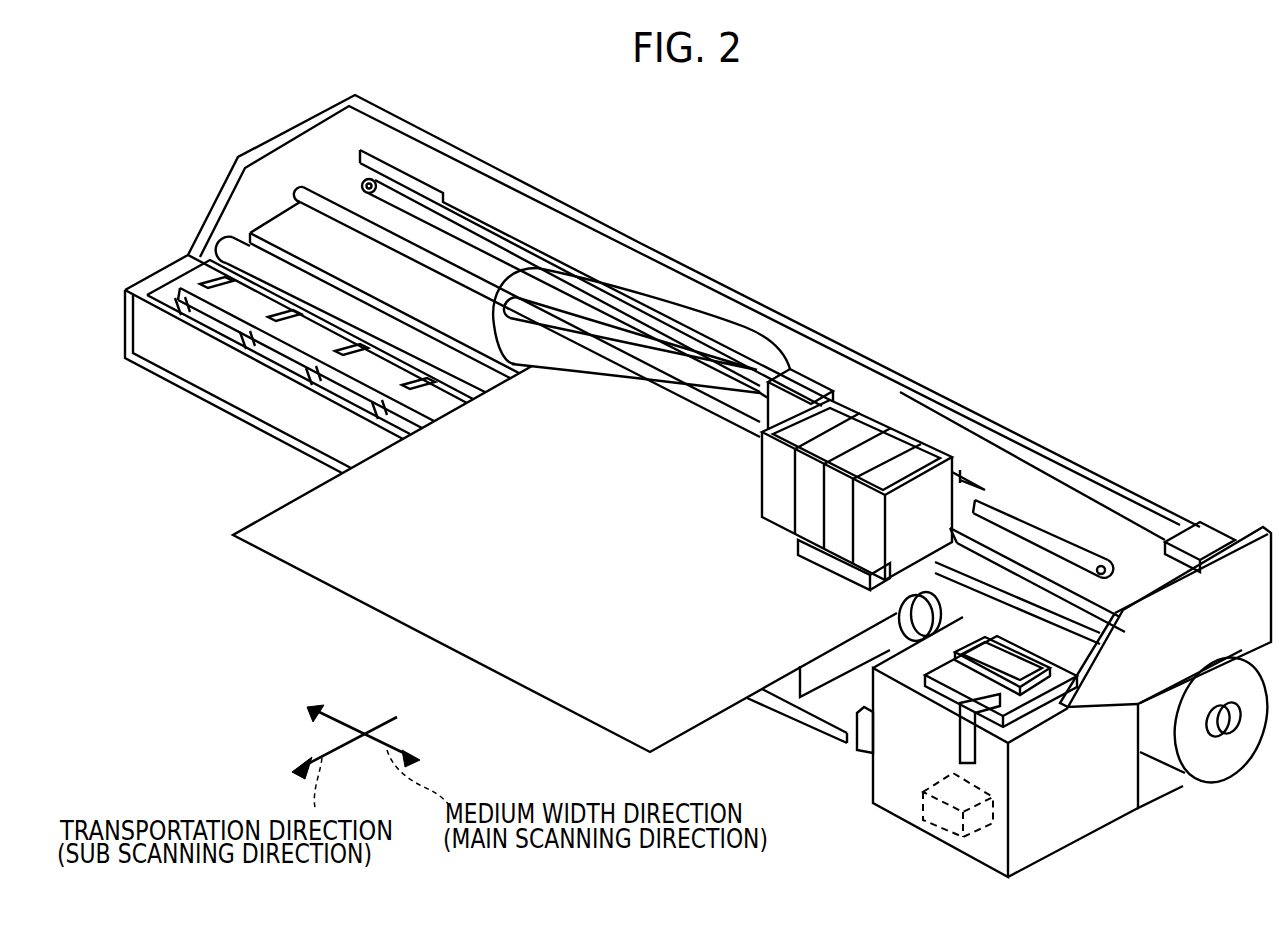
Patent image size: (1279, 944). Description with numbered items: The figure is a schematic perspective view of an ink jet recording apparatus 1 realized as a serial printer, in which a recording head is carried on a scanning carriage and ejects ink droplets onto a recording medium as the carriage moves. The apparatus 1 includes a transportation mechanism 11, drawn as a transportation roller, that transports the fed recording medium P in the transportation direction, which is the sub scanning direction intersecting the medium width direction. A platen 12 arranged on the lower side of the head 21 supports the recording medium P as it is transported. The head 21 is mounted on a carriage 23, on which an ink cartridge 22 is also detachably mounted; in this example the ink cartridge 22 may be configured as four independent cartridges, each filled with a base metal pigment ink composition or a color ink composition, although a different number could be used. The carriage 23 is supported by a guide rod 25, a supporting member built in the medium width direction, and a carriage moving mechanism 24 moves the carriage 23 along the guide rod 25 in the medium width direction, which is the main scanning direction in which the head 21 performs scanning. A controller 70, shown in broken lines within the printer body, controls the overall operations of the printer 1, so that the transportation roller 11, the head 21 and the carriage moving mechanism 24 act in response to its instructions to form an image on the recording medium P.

The ink jet recording apparatus 1 is at (662, 250).
The transportation mechanism 11 is at (1174, 770).
The platen 12 is at (167, 291).
The head 21 is at (817, 556).
The ink cartridge 22 is at (922, 460).
The carriage 23 is at (958, 480).
The carriage moving mechanism 24 is at (1050, 518).
The guide rod 25 is at (315, 198).
The controller 70 is at (945, 828).
The recording medium P is at (358, 583).